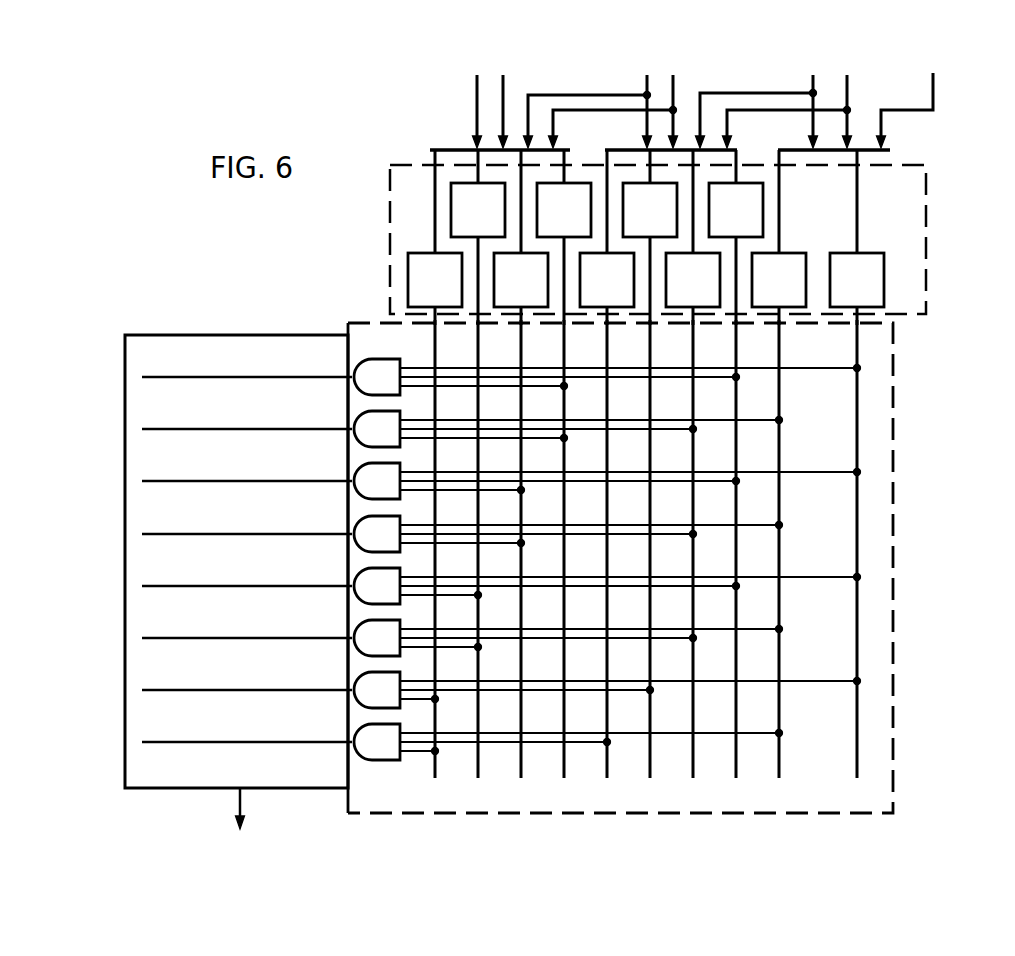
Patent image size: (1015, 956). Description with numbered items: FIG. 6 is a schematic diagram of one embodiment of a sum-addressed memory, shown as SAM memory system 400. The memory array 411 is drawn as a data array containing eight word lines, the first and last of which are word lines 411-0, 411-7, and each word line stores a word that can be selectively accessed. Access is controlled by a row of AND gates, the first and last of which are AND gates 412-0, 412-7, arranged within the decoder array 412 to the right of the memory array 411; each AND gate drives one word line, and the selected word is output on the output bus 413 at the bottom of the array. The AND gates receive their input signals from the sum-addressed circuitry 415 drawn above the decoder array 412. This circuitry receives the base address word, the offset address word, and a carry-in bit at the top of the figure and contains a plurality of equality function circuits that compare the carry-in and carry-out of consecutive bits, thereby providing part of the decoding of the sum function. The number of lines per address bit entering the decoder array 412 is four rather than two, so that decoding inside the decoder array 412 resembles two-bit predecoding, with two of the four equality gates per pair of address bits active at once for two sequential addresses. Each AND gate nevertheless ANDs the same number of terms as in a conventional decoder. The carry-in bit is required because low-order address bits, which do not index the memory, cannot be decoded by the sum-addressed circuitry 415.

The SAM memory system 400 is at (936, 815).
The memory array 411 is at (124, 534).
The word line 411-0 is at (148, 363).
The word line 411-7 is at (148, 728).
The decoder array 412 is at (893, 652).
The AND gate 412-0 is at (372, 367).
The AND gate 412-7 is at (368, 753).
The output bus 413 is at (248, 823).
The sum-addressed circuitry 415 is at (923, 237).